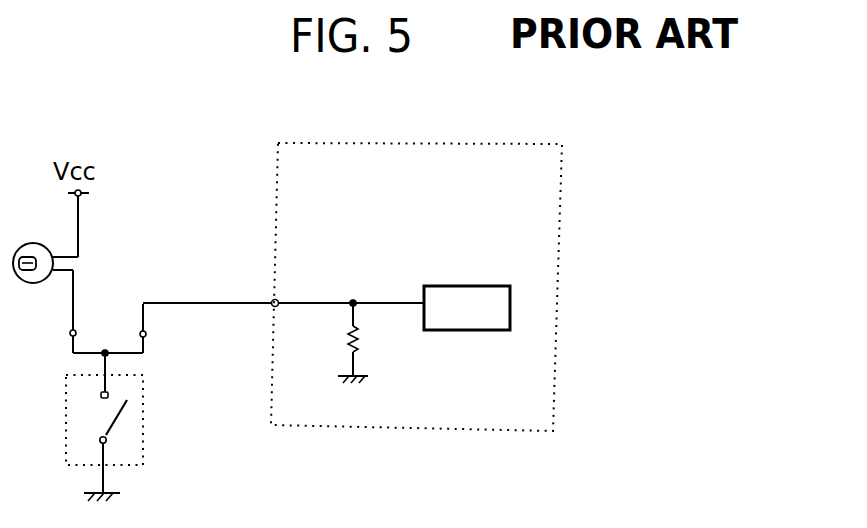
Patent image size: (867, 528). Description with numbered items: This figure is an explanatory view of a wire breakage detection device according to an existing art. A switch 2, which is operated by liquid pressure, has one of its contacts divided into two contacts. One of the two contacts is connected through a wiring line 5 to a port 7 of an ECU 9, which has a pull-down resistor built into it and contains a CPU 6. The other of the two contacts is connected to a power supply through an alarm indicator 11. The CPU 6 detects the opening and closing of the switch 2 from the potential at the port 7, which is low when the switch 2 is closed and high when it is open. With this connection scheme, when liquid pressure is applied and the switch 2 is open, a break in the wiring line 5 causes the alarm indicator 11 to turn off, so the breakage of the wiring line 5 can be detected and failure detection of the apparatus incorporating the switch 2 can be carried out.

The switch 2 is at (63, 418).
The wiring line 5 is at (162, 300).
The CPU 6 is at (484, 285).
The port 7 is at (270, 300).
The ECU 9 is at (533, 142).
The alarm indicator 11 is at (33, 243).